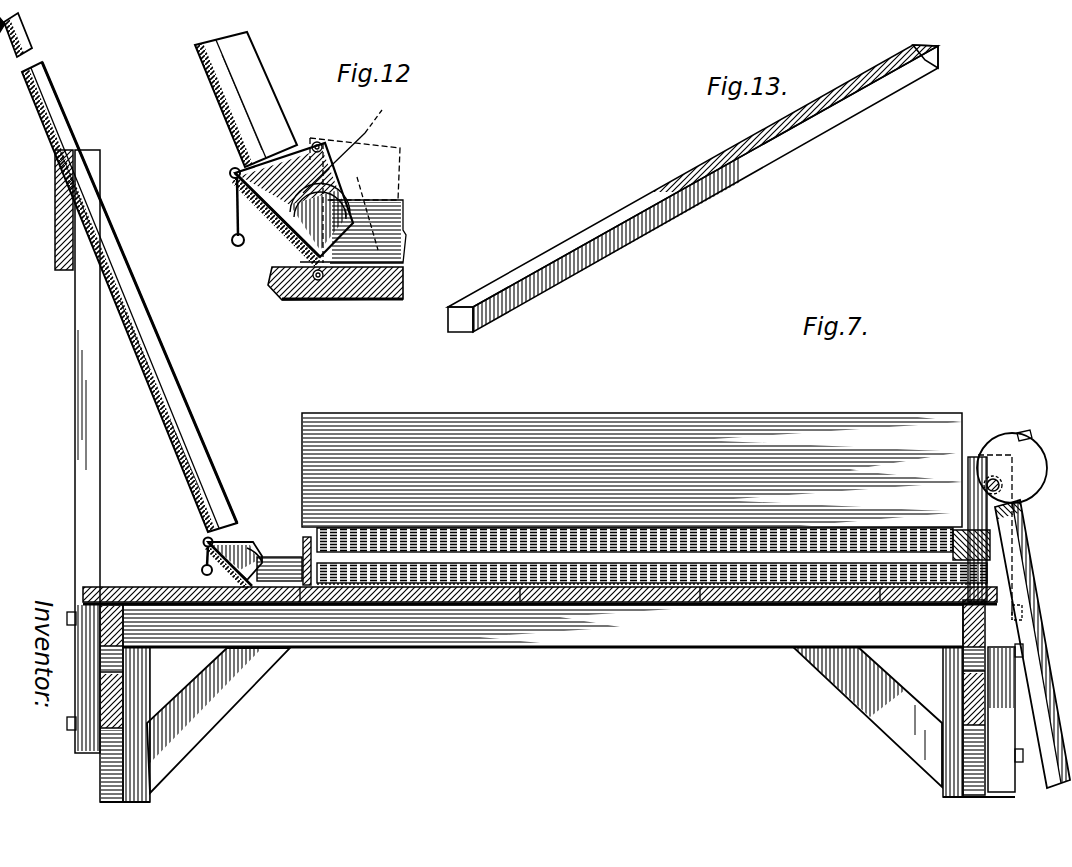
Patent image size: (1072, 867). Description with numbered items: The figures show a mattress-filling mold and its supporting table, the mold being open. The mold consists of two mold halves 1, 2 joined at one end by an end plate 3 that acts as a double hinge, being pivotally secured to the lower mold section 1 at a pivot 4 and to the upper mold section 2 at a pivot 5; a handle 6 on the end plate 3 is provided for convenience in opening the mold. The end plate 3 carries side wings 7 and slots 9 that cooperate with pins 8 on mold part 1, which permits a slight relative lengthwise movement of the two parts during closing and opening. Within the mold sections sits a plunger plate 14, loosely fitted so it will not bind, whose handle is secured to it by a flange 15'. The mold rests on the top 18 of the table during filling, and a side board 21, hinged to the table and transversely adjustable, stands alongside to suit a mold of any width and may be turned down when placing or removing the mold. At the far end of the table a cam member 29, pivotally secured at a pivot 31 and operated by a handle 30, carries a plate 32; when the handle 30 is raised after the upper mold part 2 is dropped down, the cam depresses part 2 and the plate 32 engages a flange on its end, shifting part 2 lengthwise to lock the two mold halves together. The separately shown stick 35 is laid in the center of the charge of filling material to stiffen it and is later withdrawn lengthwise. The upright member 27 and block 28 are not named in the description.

In FIG. 12, the mold half 1 is at (374, 231).
In FIG. 7, the mold half 1 is at (296, 600).
In FIG. 12, the mold half 2 is at (213, 92).
In FIG. 7, the mold half 2 is at (182, 465).
In FIG. 12, the end plate 3 is at (265, 232).
In FIG. 7, the end plate 3 is at (195, 595).
In FIG. 12, the pivot 4 is at (319, 282).
In FIG. 7, the pivot 4 is at (268, 600).
In FIG. 12, the pivot 5 is at (232, 171).
In FIG. 7, the pivot 5 is at (203, 540).
In FIG. 12, the handle 6 is at (233, 238).
In FIG. 7, the handle 6 is at (202, 568).
In FIG. 12, the side wings 7 is at (348, 174).
In FIG. 12, the pins 8 is at (365, 200).
In FIG. 7, the pins 8 is at (250, 543).
In FIG. 12, the slots 9 is at (297, 225).
In FIG. 7, the plunger plate 14 is at (303, 540).
In FIG. 7, the flange 15' is at (279, 516).
In FIG. 12, the table top 18 is at (373, 295).
In FIG. 7, the table top 18 is at (110, 587).
In FIG. 7, the side board 21 is at (587, 422).
In FIG. 7, the upright post 27 is at (80, 397).
In FIG. 7, the block 28 is at (55, 212).
In FIG. 7, the cam member 29 is at (1033, 460).
In FIG. 7, the operating handle 30 is at (1042, 633).
In FIG. 7, the pivot 31 is at (1003, 490).
In FIG. 7, the plate 32 is at (1027, 436).
In FIG. 13, the stick 35 is at (740, 163).
In FIG. 7, the stick 35 is at (763, 557).